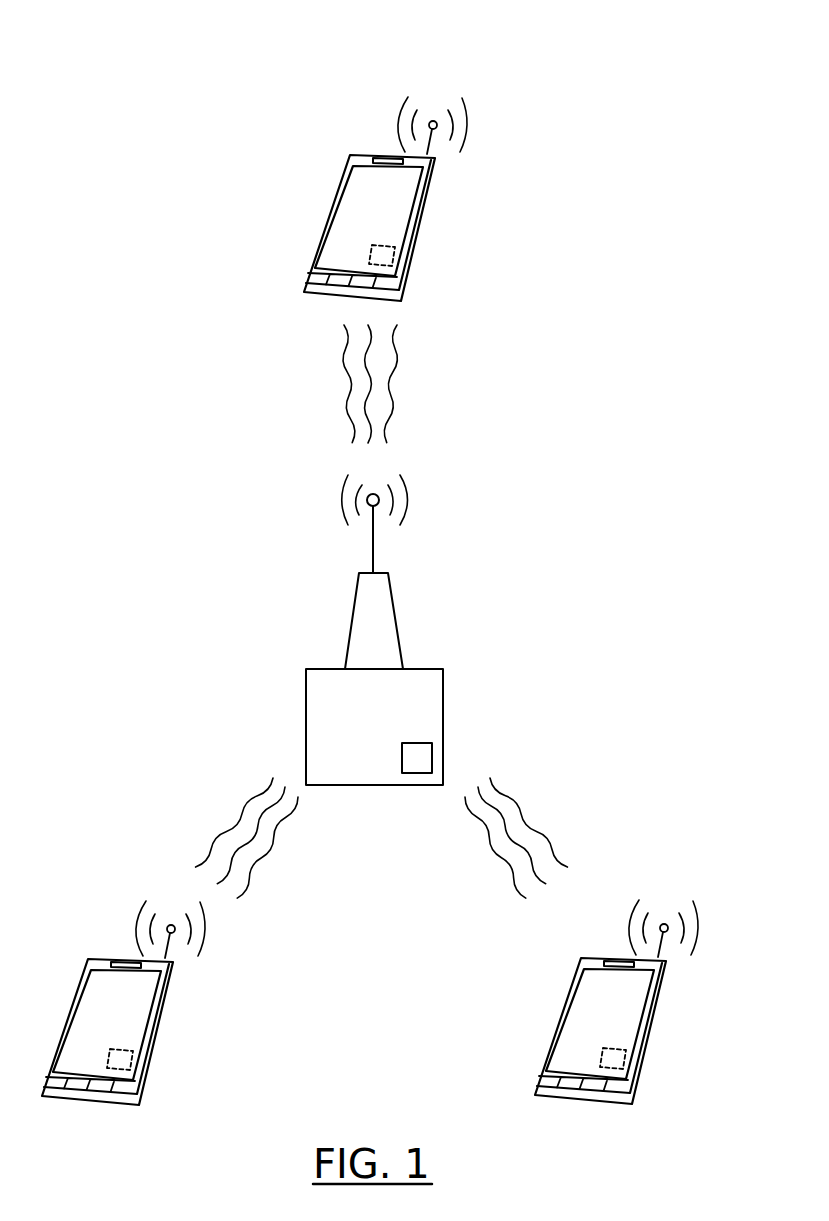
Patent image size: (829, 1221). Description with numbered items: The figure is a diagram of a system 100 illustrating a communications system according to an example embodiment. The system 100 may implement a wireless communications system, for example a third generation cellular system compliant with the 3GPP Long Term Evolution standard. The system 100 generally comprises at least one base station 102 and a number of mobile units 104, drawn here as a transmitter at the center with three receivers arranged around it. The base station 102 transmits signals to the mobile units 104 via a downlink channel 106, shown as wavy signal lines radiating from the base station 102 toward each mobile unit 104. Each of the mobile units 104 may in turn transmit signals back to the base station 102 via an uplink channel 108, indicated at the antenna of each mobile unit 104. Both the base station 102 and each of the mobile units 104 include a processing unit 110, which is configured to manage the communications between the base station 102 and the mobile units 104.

The system 100 is at (212, 47).
The base station 102 is at (327, 668).
The mobile unit 104 is at (368, 155).
The downlink channel 106 is at (343, 371).
The uplink channel 108 is at (468, 127).
The processing unit 110 is at (387, 246).